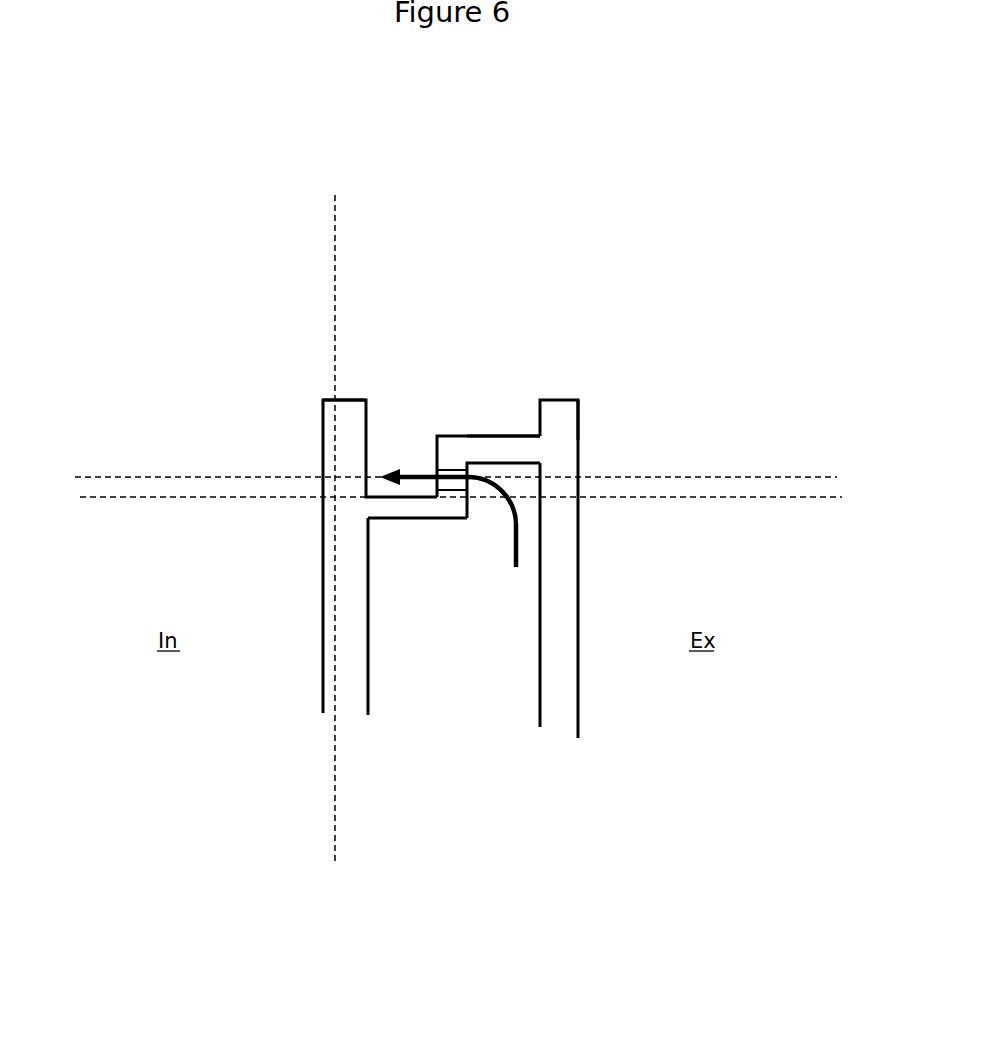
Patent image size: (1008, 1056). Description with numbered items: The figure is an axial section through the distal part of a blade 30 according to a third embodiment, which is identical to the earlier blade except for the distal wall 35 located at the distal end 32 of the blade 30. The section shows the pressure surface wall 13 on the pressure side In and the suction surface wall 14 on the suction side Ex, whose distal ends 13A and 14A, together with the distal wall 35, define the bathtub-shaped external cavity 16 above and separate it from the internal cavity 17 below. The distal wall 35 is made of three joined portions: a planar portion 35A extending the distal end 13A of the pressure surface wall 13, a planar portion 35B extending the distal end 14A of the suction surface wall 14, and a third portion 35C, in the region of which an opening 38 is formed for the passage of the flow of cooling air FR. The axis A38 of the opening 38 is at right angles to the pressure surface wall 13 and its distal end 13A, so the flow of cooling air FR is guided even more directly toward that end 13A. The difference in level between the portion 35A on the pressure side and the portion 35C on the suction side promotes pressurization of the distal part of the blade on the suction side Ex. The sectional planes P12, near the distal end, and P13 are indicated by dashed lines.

The blade 30 is at (713, 169).
The distal end 32 is at (138, 260).
The pressure surface wall 13 is at (323, 686).
The distal end of the pressure surface wall 13A is at (323, 421).
The suction surface wall 14 is at (558, 602).
The distal end of the suction surface wall 14A is at (558, 408).
The external cavity 16 is at (479, 417).
The internal cavity 17 is at (426, 656).
The distal wall 35 is at (507, 452).
The first planar portion of the distal wall 35A is at (383, 512).
The second planar portion of the distal wall 35B is at (513, 440).
The third portion of the distal wall 35C is at (450, 465).
The opening 38 is at (447, 490).
The flow of cooling air FR is at (513, 533).
The axis of the opening A38 is at (96, 474).
The sectional plane P12 is at (127, 501).
The sectional plane P13 is at (333, 240).